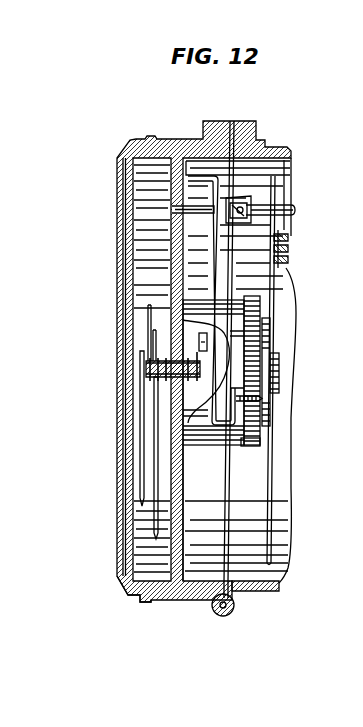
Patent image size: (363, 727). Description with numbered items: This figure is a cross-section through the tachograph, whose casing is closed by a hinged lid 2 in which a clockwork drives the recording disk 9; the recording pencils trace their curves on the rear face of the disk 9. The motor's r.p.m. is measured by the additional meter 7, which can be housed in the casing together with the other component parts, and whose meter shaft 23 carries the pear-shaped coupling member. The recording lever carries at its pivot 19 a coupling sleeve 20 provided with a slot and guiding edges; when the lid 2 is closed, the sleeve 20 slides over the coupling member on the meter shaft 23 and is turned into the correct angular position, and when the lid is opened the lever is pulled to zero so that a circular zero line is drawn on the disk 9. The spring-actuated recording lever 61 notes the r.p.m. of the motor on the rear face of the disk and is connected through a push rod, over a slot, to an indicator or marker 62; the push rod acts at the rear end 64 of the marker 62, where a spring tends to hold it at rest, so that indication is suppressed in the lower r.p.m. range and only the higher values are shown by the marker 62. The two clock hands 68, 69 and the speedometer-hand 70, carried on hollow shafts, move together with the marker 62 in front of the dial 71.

The hinged lid 2 is at (158, 585).
The additional meter 7 is at (254, 581).
The recording disk 9 is at (262, 502).
The pivot 19 is at (186, 199).
The coupling sleeve 20 is at (235, 192).
The meter shaft 23 is at (272, 200).
The spring-actuated recording lever 61 is at (214, 244).
The marker 62 is at (147, 420).
The rear end of the marker 64 is at (175, 312).
The clock hand 68 is at (140, 307).
The clock hand 69 is at (146, 329).
The speedometer-hand 70 is at (132, 388).
The dial 71 is at (162, 229).